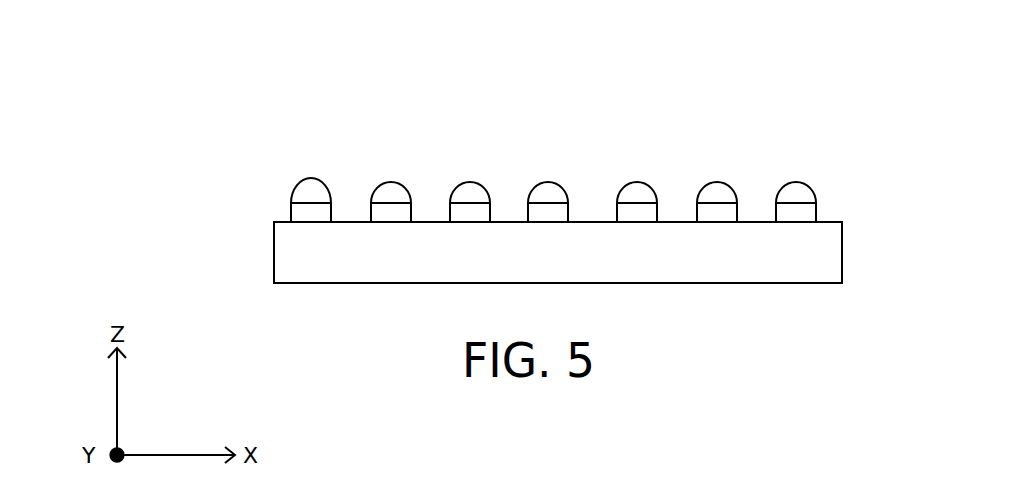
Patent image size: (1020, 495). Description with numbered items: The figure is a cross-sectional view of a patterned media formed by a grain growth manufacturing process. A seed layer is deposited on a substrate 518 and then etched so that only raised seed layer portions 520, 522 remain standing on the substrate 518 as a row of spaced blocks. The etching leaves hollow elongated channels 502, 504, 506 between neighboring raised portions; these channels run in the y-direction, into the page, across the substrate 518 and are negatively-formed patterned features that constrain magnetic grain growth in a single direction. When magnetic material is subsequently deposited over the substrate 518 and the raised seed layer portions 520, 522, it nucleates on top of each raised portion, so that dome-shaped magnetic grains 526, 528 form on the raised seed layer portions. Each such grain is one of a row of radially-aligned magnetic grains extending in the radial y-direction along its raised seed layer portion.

The substrate 518 is at (578, 264).
The raised seed layer portion 520 is at (302, 212).
The magnetic grain 528 is at (310, 178).
The hollow elongated channel 502 is at (356, 180).
The hollow elongated channel 504 is at (432, 200).
The hollow elongated channel 506 is at (511, 192).
The magnetic grain 526 is at (642, 183).
The raised seed layer portion 522 is at (643, 213).